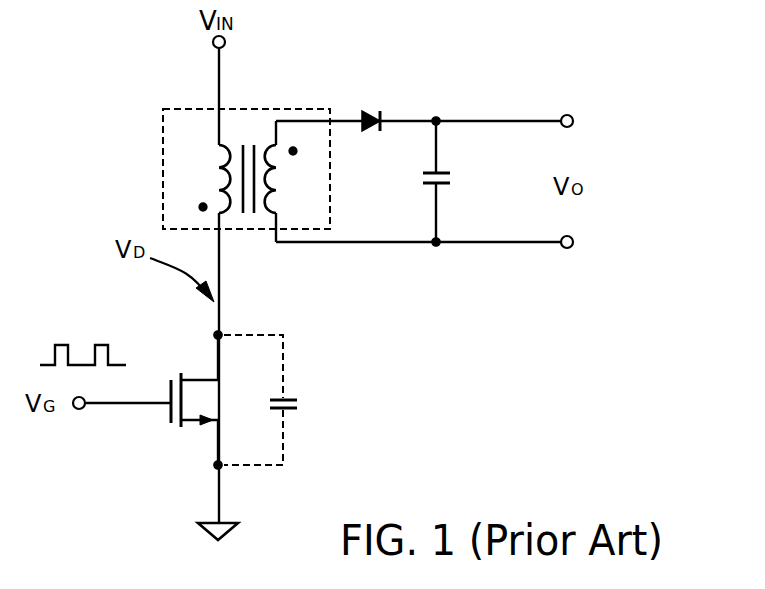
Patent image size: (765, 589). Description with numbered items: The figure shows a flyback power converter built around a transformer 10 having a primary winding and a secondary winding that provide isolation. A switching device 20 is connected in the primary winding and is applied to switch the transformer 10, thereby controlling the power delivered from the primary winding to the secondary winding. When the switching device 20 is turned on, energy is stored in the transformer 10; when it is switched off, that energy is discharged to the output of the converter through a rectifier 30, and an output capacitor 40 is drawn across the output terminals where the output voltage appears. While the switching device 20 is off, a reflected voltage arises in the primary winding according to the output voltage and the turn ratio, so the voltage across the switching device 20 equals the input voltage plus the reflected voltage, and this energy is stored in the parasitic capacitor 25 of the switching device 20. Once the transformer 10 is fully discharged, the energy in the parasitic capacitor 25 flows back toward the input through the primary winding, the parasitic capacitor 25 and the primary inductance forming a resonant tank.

The transformer 10 is at (243, 108).
The switching device 20 is at (175, 371).
The parasitic capacitor 25 is at (302, 403).
The rectifier 30 is at (372, 110).
The output capacitor 40 is at (462, 177).